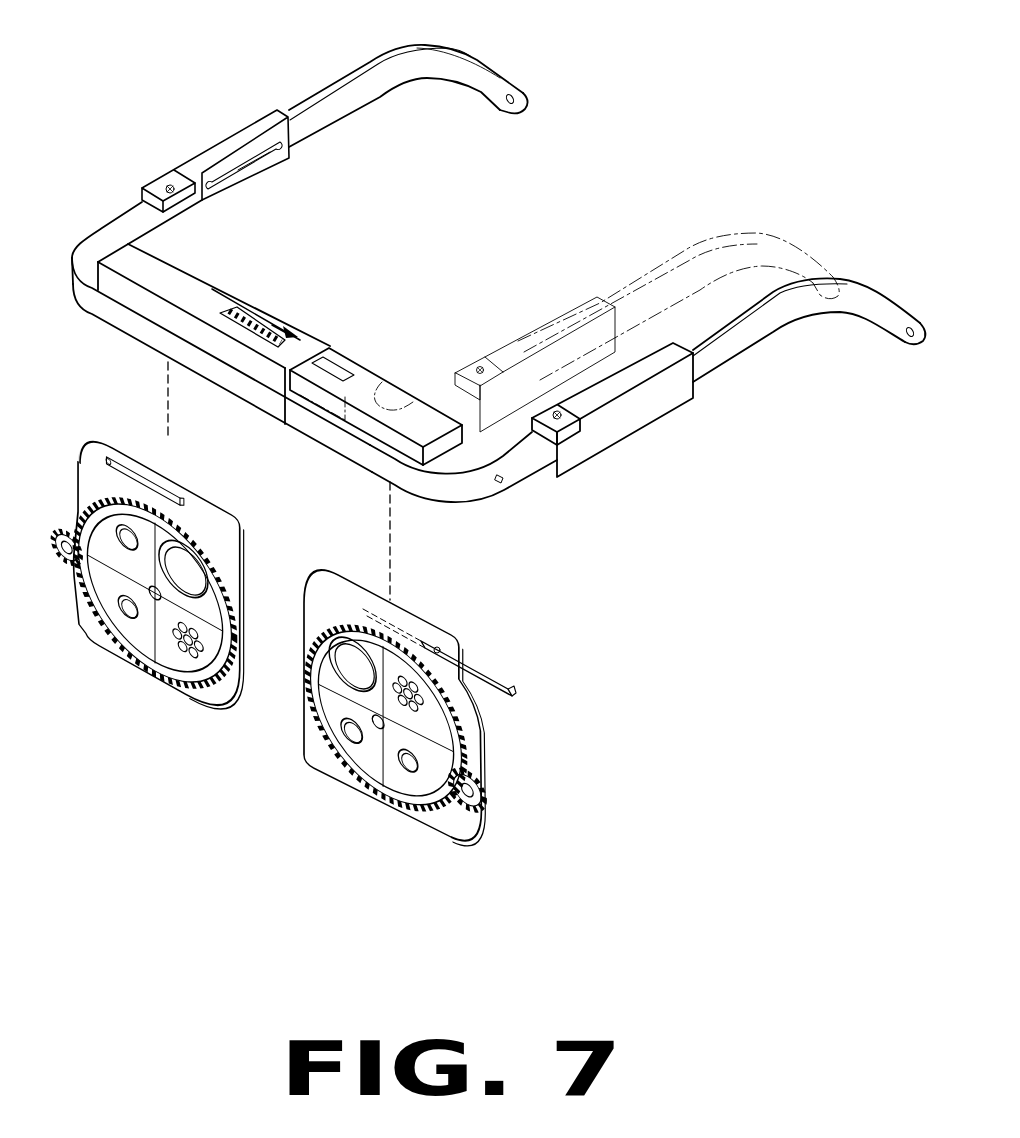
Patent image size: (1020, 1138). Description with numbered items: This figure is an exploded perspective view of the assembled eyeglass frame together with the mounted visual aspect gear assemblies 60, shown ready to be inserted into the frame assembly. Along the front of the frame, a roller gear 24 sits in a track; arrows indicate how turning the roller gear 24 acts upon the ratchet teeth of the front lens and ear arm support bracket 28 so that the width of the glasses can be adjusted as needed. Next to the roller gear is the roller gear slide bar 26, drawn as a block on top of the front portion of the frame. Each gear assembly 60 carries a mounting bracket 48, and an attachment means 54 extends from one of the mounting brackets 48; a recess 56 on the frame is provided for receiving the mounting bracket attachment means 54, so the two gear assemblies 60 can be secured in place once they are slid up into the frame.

The roller gear 24 is at (216, 340).
The roller gear slide bar 26 is at (312, 338).
The front lens and ear arm support bracket 28 is at (413, 483).
The mounting brackets 48 is at (313, 600).
The attachment means 54 is at (477, 663).
The recess 56 is at (502, 479).
The gear assemblies 60 is at (108, 648).